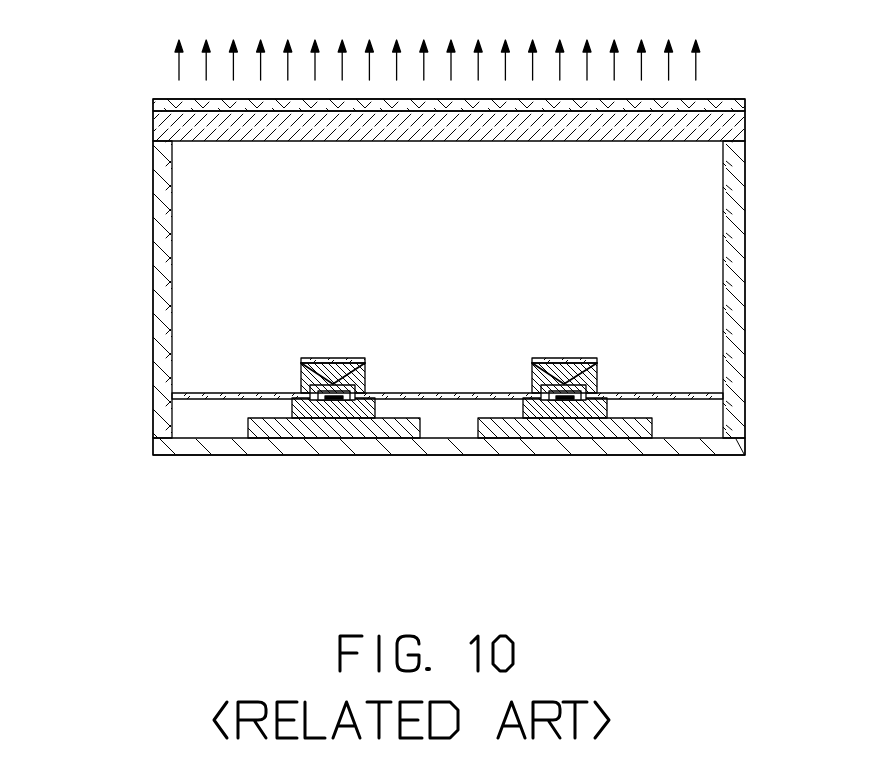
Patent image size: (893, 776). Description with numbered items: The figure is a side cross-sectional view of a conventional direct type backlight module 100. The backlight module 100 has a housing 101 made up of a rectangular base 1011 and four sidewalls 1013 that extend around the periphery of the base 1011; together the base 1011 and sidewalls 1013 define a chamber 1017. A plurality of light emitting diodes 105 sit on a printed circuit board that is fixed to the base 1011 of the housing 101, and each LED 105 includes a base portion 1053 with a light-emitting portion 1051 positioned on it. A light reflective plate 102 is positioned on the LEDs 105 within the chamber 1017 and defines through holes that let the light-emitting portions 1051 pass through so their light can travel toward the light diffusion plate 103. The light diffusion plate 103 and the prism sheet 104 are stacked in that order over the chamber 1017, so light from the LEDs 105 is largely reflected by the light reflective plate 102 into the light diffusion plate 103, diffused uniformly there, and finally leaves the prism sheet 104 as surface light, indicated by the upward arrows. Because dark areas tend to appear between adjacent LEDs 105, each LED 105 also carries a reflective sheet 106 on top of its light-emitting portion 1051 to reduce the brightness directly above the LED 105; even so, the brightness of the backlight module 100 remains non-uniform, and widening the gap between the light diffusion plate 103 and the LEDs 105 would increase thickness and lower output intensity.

The backlight module 100 is at (137, 70).
The housing 101 is at (424, 316).
The base 1011 is at (408, 464).
The sidewalls 1013 is at (162, 340).
The chamber 1017 is at (710, 193).
The light reflective plate 102 is at (658, 391).
The light diffusion plate 103 is at (733, 139).
The prism sheet 104 is at (715, 103).
The light emitting diode 105 is at (321, 476).
The light-emitting portion 1051 is at (303, 385).
The base portion 1053 is at (327, 398).
The reflective sheet 106 is at (322, 358).